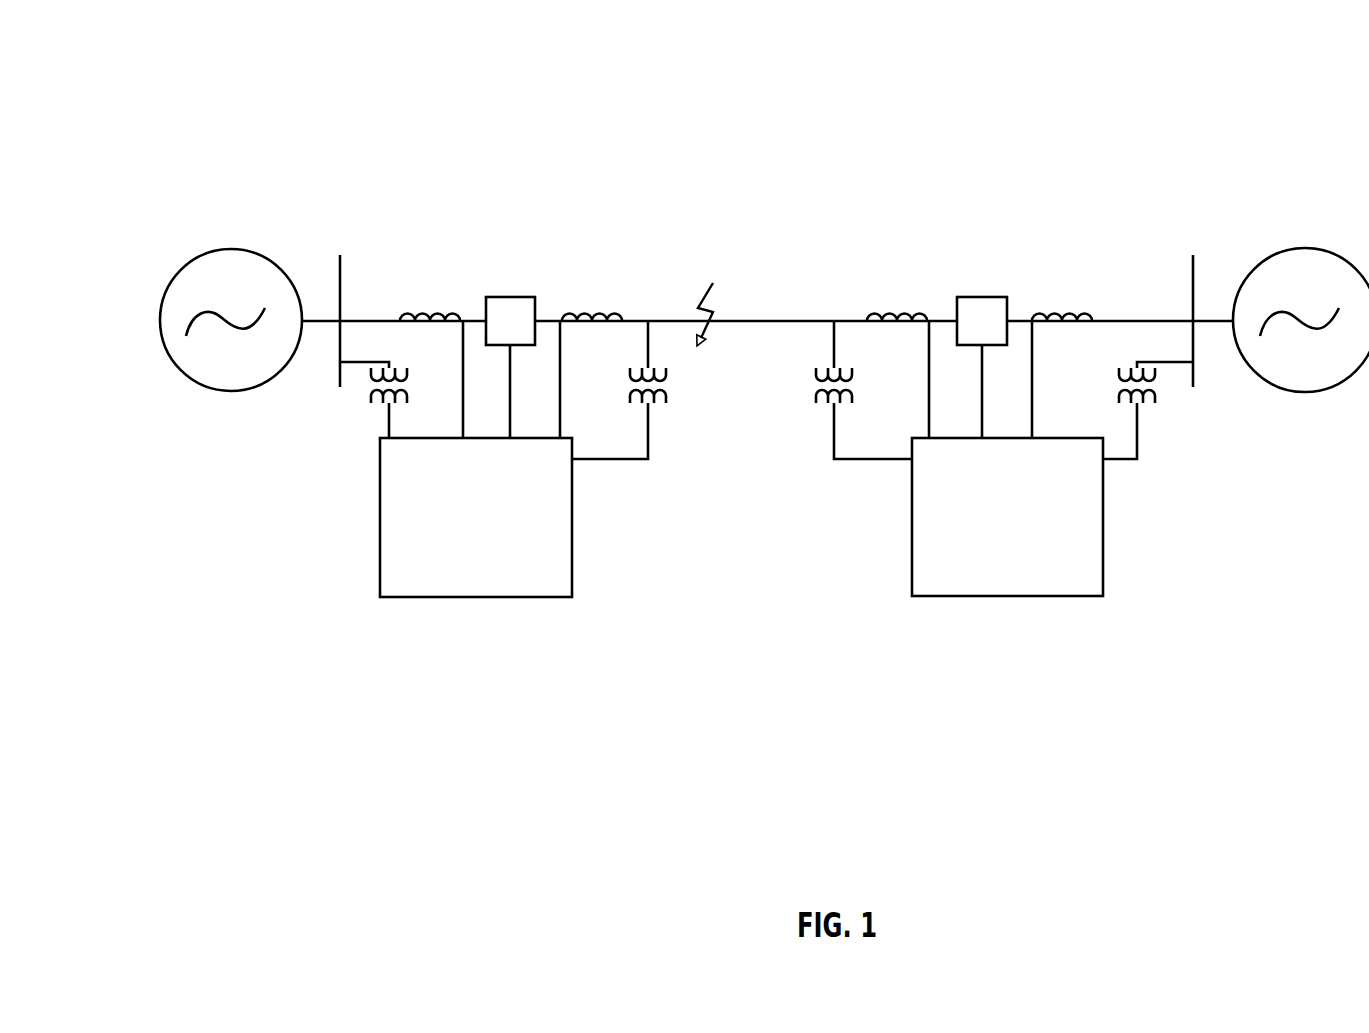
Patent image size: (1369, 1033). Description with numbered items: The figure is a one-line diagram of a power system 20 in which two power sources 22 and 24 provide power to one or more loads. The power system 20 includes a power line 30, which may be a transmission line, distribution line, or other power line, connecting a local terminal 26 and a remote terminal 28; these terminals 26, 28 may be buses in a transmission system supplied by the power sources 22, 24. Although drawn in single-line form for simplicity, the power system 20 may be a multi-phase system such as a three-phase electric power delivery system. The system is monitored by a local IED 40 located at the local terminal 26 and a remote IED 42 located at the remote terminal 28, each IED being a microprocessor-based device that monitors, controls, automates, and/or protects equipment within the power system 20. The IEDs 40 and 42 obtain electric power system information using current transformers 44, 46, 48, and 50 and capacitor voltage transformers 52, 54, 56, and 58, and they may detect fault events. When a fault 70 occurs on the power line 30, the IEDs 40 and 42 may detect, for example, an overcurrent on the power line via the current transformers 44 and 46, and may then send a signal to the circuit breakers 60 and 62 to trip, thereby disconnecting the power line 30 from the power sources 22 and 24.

The power system 20 is at (1106, 76).
The power source 22 is at (228, 392).
The power source 24 is at (1322, 391).
The local terminal 26 is at (341, 270).
The remote terminal 28 is at (1194, 270).
The power line 30 is at (776, 320).
The local IED 40 is at (423, 599).
The remote IED 42 is at (956, 599).
The current transformer 44 is at (403, 315).
The current transformer 46 is at (565, 315).
The current transformer 48 is at (1035, 315).
The current transformer 50 is at (868, 315).
The capacitor voltage transformer 52 is at (373, 395).
The capacitor voltage transformer 54 is at (664, 395).
The capacitor voltage transformer 56 is at (1152, 395).
The capacitor voltage transformer 58 is at (817, 395).
The circuit breaker 60 is at (511, 297).
The circuit breaker 62 is at (975, 297).
The fault 70 is at (705, 288).